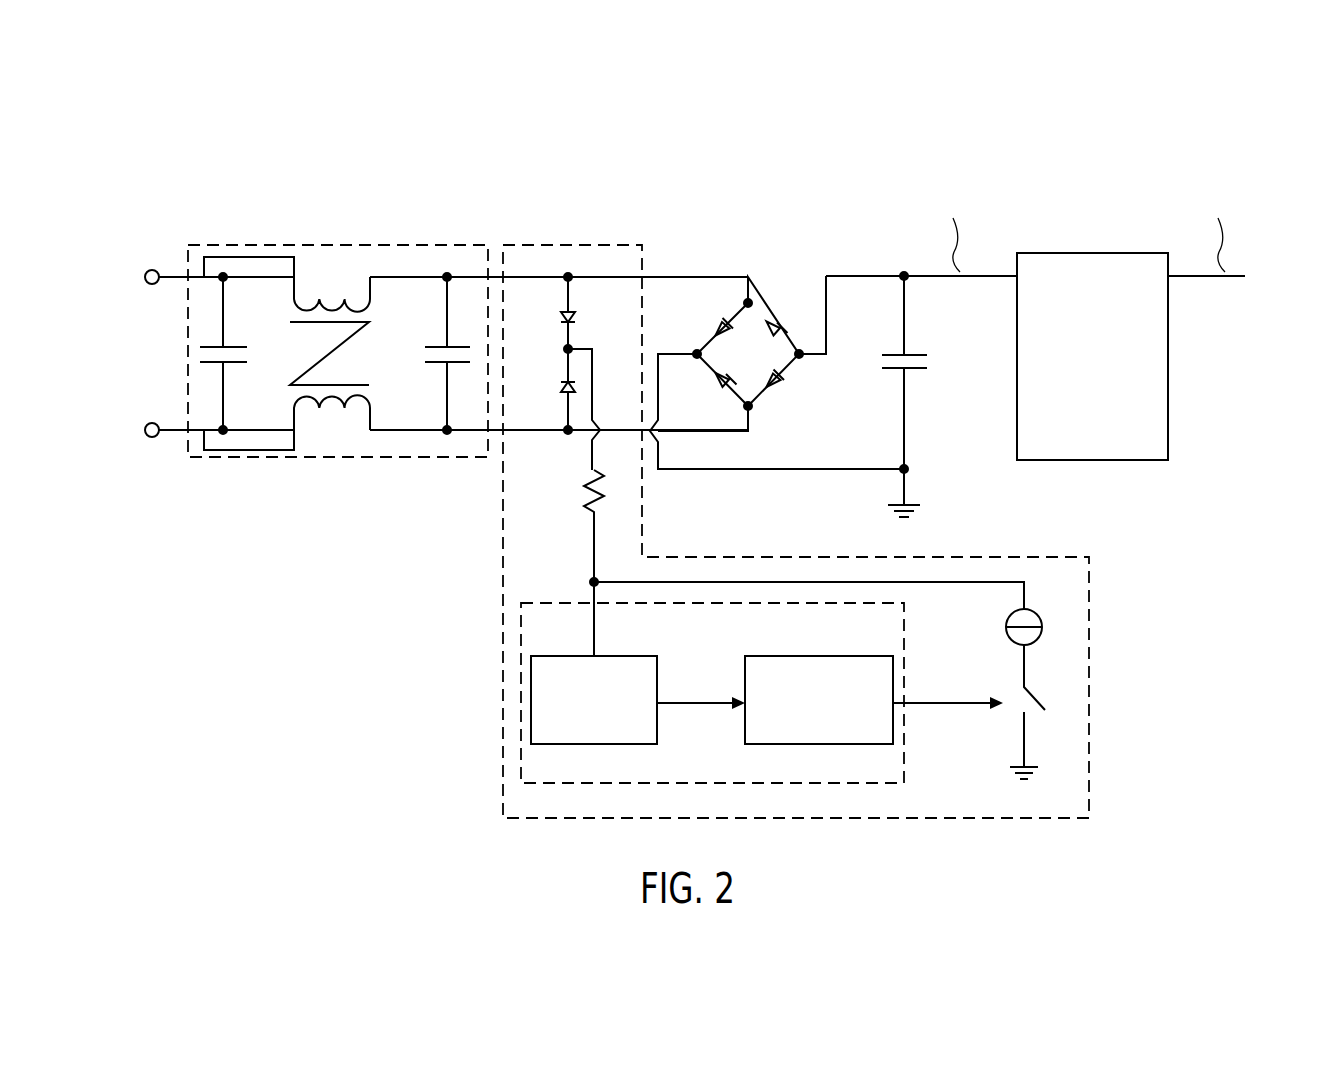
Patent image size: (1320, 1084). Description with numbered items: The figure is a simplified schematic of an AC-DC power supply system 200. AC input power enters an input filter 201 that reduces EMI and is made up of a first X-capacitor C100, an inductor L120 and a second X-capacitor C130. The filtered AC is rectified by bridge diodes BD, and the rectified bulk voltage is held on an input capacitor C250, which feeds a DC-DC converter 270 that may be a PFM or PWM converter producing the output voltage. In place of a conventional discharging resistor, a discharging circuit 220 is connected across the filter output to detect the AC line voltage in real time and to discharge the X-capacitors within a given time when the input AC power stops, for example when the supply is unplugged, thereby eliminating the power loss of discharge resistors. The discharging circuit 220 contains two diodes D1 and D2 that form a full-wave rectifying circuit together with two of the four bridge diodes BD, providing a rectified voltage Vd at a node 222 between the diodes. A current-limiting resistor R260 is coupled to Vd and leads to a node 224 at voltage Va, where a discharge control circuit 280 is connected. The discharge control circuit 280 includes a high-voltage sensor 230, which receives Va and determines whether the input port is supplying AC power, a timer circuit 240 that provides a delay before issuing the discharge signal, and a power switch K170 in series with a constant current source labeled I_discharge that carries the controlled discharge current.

The power supply system 200 is at (1155, 184).
The input filter 201 is at (436, 245).
The discharging circuit 220 is at (578, 245).
The node 222 is at (551, 348).
The node 224 is at (611, 570).
The high-voltage (HV) sensor 230 is at (548, 656).
The timer circuit 240 is at (815, 656).
The DC-DC converter 270 is at (1093, 465).
The discharge control circuit 280 is at (542, 603).
The first X-capacitor C100 is at (239, 353).
The inductor L120 is at (292, 353).
The second X-capacitor C130 is at (431, 353).
The diode D1 is at (554, 313).
The diode D2 is at (554, 389).
The current-limiting resistor R260 is at (570, 526).
The bridge diodes BD is at (777, 372).
The input capacitor C250 is at (921, 394).
The power switch K170 is at (1042, 712).